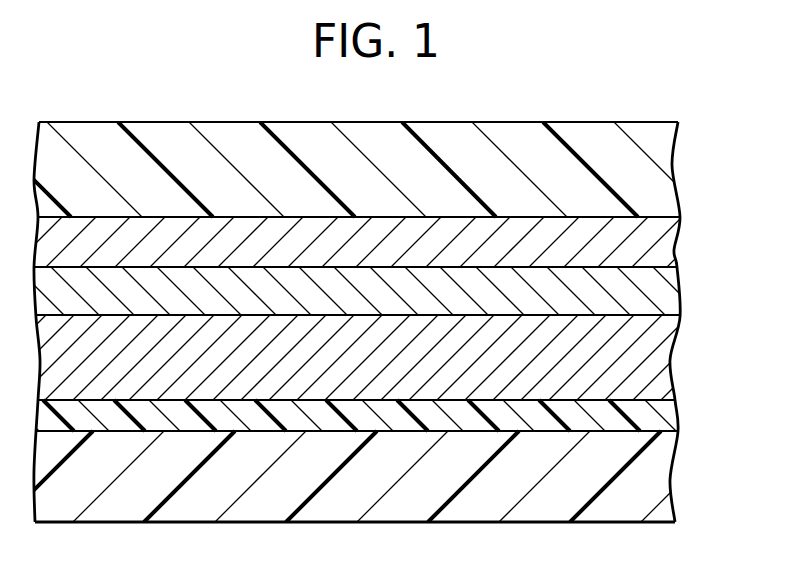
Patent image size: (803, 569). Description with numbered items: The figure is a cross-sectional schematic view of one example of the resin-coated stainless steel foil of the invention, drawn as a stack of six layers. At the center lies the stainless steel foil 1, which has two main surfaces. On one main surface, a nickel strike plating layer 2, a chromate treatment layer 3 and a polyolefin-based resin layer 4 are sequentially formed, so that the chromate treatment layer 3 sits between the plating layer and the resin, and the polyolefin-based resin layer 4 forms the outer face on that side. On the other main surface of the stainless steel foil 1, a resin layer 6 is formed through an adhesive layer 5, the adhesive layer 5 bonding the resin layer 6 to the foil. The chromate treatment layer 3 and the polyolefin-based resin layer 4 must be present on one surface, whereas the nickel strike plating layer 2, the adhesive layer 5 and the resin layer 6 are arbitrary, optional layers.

The stainless steel foil 1 is at (664, 356).
The nickel strike plating layer 2 is at (666, 291).
The chromate treatment layer 3 is at (666, 239).
The polyolefin-based resin layer 4 is at (666, 165).
The adhesive layer 5 is at (666, 412).
The resin layer 6 is at (660, 478).